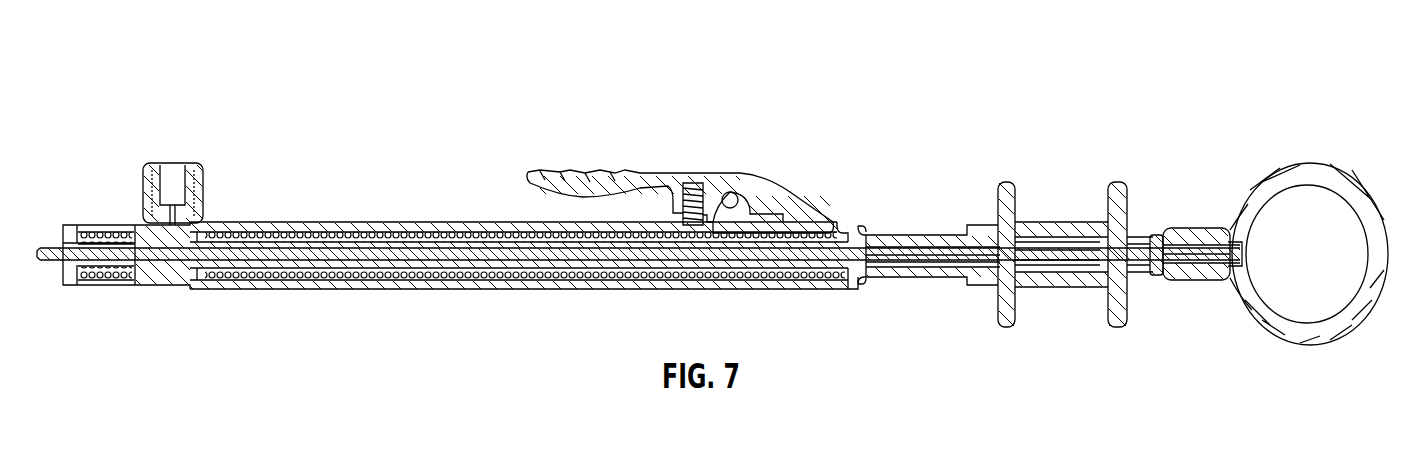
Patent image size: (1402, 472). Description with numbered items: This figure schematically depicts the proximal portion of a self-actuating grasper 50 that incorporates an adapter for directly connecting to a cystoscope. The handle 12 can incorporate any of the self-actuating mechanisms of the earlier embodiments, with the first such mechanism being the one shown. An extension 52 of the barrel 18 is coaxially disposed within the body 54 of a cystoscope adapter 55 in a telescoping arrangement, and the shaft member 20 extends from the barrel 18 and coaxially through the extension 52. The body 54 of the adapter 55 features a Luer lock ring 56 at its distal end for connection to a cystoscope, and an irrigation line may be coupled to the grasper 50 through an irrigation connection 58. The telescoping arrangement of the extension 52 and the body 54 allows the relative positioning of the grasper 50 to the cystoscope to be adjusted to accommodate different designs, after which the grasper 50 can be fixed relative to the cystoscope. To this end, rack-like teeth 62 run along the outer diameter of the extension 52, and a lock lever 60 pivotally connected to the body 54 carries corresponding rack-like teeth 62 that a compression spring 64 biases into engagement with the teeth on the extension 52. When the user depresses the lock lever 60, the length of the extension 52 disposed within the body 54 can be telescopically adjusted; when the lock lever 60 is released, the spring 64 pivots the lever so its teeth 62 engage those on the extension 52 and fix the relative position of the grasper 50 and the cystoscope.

The grasper 50 is at (608, 57).
The handle 12 is at (1067, 143).
The barrel 18 is at (916, 234).
The shaft member 20 is at (38, 268).
The extension 52 is at (285, 264).
The body 54 is at (375, 222).
The cystoscope adapter 55 is at (170, 274).
The Luer lock ring 56 is at (106, 285).
The irrigation connection 58 is at (172, 172).
The lock lever 60 is at (590, 172).
The rack-like teeth 62 is at (812, 216).
The compression spring 64 is at (692, 182).